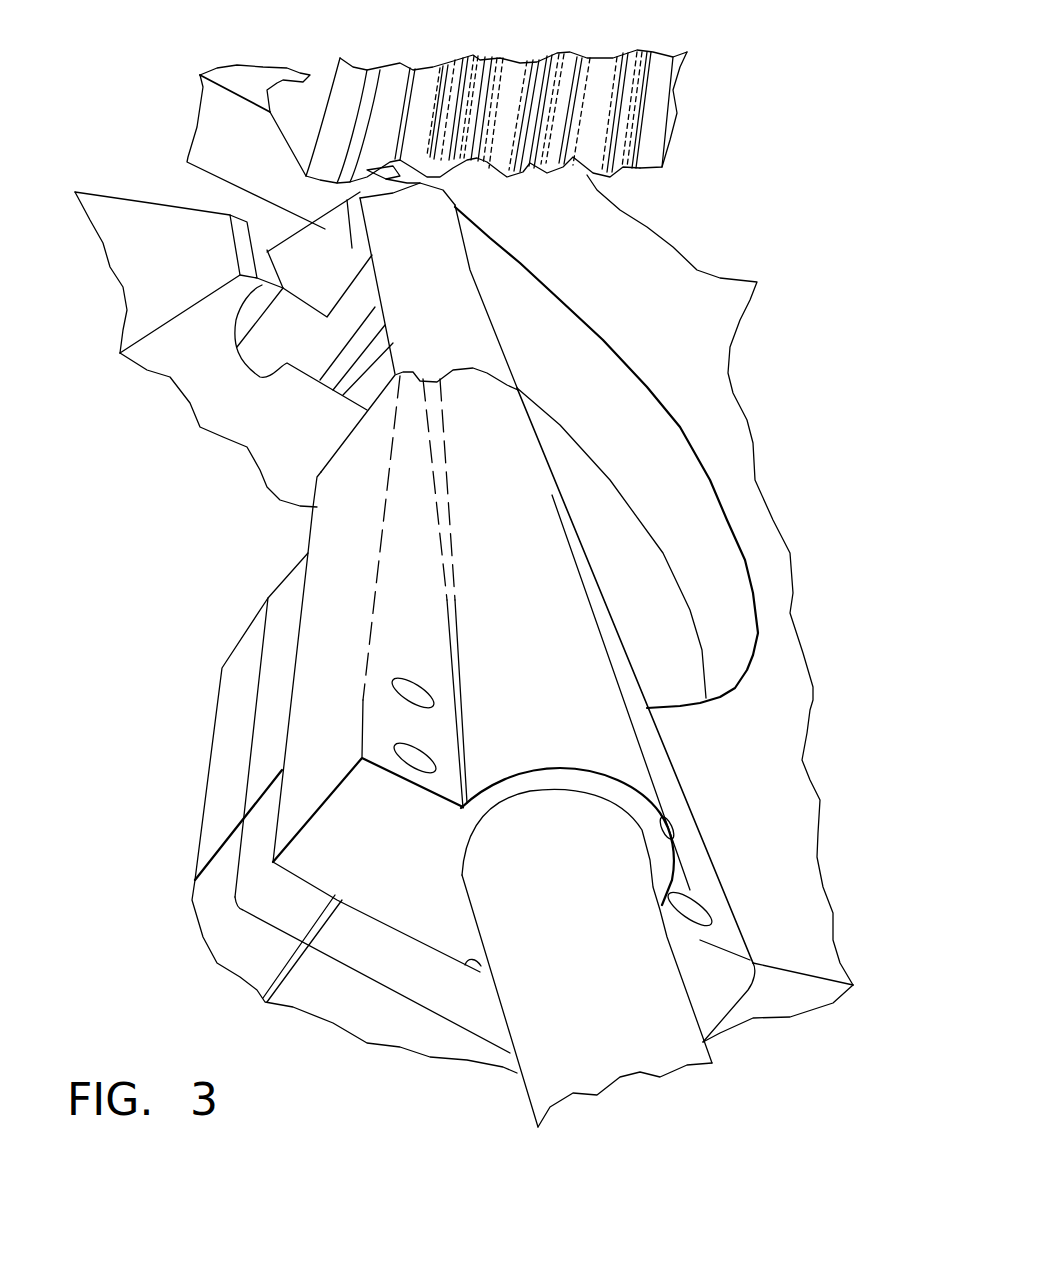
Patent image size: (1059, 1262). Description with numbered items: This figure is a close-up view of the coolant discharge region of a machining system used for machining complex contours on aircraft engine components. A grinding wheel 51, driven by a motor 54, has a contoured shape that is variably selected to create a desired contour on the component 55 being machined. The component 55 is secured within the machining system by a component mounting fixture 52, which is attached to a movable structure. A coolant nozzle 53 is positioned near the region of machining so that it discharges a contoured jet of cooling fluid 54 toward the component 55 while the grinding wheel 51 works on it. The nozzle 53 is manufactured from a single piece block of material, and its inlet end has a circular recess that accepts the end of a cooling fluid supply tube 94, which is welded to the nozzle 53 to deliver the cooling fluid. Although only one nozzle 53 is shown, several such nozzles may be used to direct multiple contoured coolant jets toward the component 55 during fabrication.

The grinding wheel 51 is at (496, 138).
The component mounting fixture 52 is at (257, 276).
The nozzle 53 is at (515, 486).
The motor 54 is at (427, 256).
The component 55 is at (447, 190).
The cooling fluid supply tube 94 is at (580, 916).